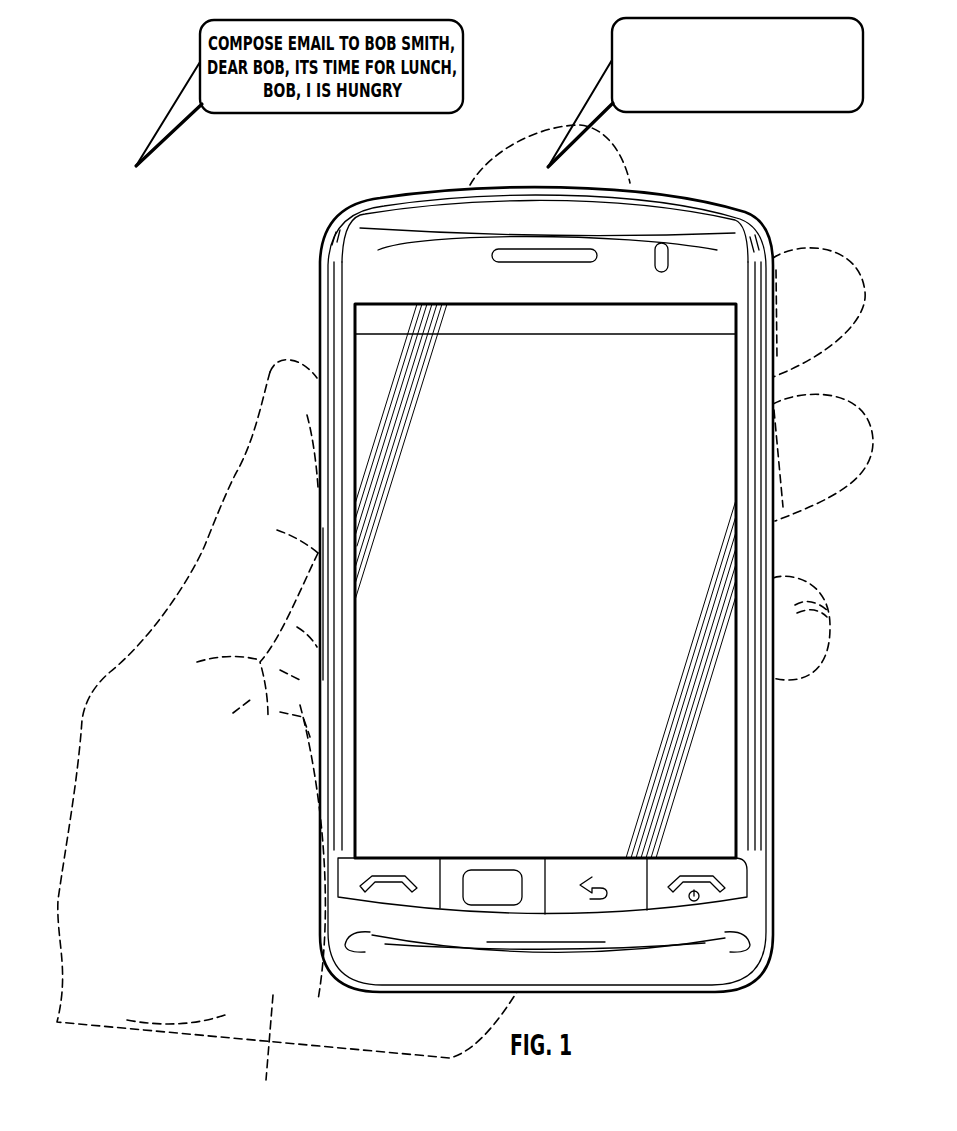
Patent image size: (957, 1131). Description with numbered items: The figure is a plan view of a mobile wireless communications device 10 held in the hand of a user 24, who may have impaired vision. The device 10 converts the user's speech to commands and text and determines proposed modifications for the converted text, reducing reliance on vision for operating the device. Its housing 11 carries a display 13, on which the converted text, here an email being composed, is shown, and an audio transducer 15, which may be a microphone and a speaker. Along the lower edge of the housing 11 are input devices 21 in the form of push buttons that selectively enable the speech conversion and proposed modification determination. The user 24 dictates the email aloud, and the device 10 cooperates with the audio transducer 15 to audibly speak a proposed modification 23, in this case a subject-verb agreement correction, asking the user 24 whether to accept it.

The mobile wireless communications device 10 is at (782, 214).
The housing 11 is at (330, 247).
The display 13 is at (720, 580).
The audio transducer 15 is at (567, 255).
The input devices 21 is at (425, 870).
The proposed modification 23 is at (612, 32).
The user 24 is at (222, 483).